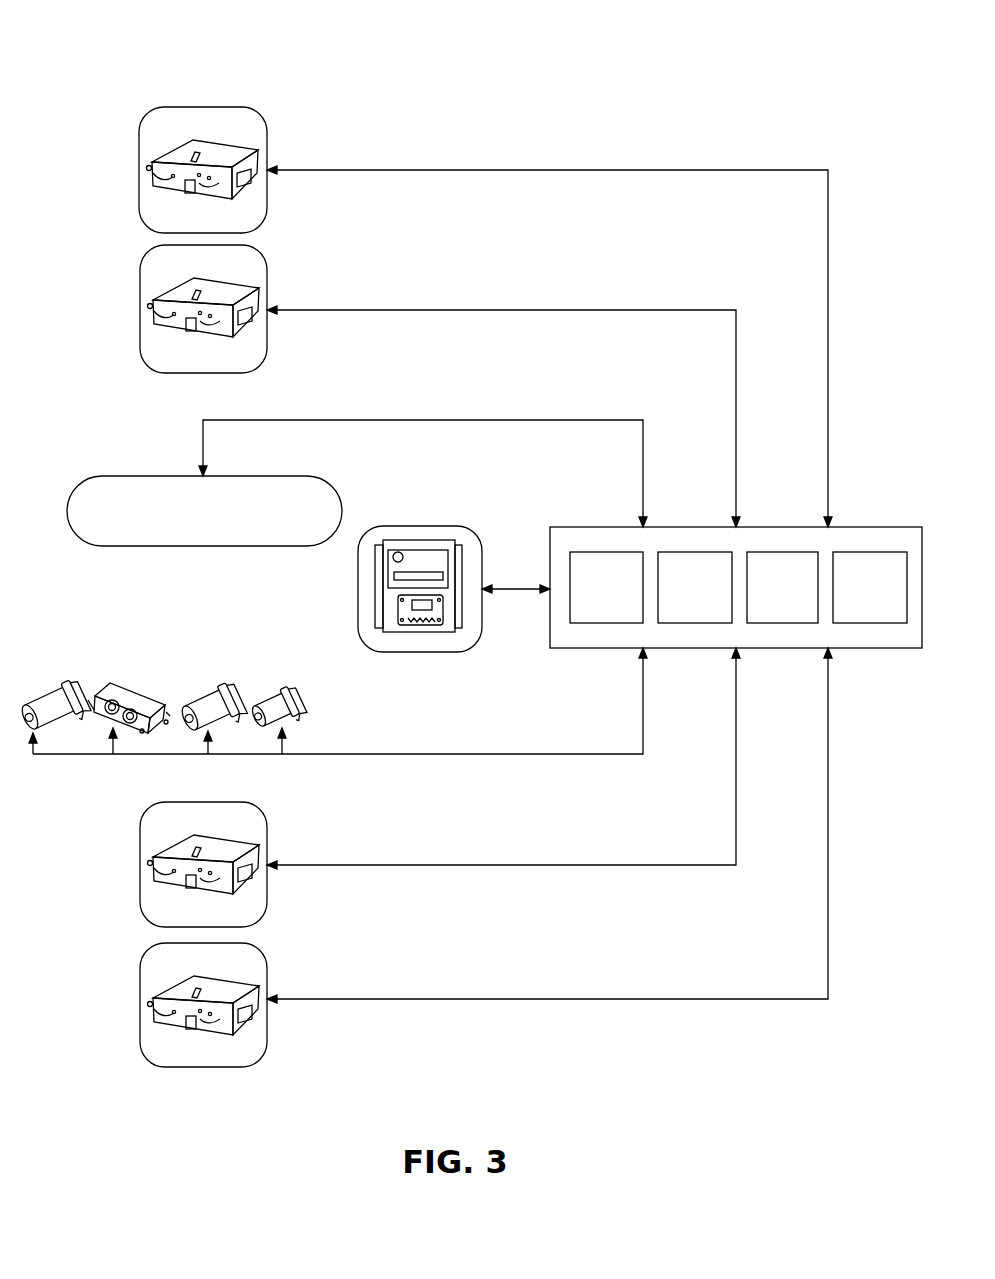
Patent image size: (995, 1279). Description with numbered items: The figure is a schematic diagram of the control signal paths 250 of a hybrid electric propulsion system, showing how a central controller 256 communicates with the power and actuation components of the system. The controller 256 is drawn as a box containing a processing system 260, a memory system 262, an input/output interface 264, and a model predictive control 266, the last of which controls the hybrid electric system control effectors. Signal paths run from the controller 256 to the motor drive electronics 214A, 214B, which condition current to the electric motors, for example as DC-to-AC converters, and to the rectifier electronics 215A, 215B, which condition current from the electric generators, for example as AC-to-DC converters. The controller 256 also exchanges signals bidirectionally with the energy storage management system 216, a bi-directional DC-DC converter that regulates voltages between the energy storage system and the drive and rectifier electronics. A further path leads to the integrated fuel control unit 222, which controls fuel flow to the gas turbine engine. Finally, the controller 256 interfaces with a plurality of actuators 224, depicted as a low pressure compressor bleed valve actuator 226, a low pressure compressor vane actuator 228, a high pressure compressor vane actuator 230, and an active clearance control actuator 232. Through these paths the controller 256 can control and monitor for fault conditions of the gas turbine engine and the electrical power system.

The control signal paths 250 is at (110, 41).
The motor drive electronics 214B is at (203, 107).
The rectifier electronics 215B is at (203, 373).
The integrated fuel control unit 222 is at (84, 483).
The energy storage management system 216 is at (450, 526).
The controller 256 is at (690, 527).
The processing system 260 is at (606, 587).
The memory system 262 is at (695, 587).
The input/output interface 264 is at (782, 587).
The model predictive control 266 is at (870, 587).
The actuators 224 is at (408, 718).
The low pressure compressor bleed valve actuator 226 is at (46, 705).
The low pressure compressor vane actuator 228 is at (135, 700).
The high pressure compressor vane actuator 230 is at (208, 705).
The active clearance control actuator 232 is at (278, 709).
The rectifier electronics 215A is at (205, 802).
The motor drive electronics 214A is at (203, 1067).